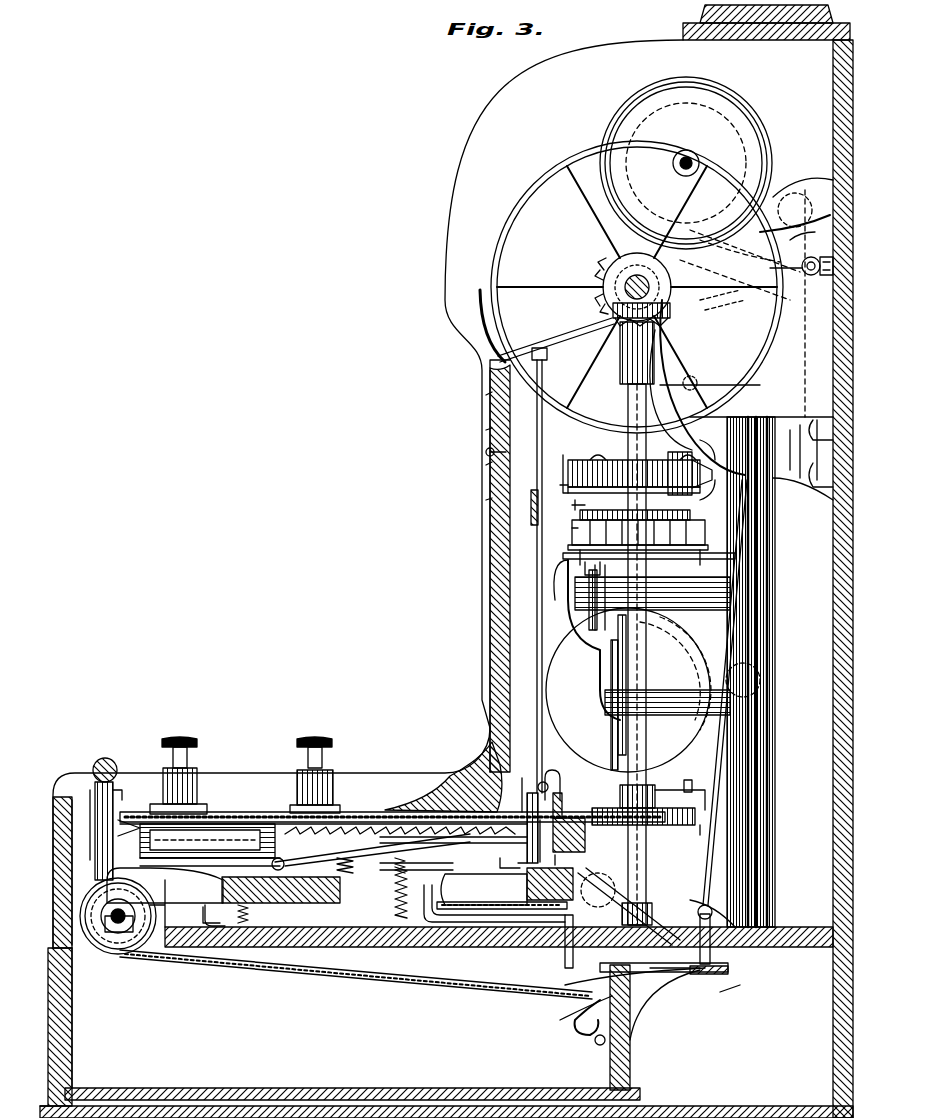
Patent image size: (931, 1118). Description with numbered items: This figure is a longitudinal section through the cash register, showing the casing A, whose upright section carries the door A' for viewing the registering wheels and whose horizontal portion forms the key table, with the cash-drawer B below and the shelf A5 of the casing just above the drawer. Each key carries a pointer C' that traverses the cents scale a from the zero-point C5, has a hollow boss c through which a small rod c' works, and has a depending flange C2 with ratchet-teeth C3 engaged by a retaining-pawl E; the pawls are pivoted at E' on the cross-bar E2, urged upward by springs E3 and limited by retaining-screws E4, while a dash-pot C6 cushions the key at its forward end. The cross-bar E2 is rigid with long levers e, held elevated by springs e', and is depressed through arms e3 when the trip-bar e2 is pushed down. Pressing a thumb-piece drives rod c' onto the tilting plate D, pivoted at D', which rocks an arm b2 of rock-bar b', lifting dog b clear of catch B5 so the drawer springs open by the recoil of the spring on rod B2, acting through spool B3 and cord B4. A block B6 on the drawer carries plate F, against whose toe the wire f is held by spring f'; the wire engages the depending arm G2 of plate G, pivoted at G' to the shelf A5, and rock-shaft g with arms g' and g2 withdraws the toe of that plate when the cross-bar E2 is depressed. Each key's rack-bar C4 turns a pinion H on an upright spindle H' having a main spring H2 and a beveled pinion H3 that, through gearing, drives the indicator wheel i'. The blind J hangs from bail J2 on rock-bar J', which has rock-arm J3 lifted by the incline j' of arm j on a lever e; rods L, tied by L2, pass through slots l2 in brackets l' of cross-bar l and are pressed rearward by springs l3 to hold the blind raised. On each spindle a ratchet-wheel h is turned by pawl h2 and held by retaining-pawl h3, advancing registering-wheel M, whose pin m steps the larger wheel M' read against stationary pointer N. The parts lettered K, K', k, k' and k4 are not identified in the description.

The casing A is at (453, 561).
The door A' is at (471, 571).
The shelf A5 is at (750, 947).
The cash-drawer B is at (446, 957).
The rod B2 is at (112, 945).
The loose spool B3 is at (168, 903).
The cord B4 is at (356, 979).
The catch B5 is at (695, 975).
The block or shelf B6 is at (650, 1005).
The plate F is at (592, 975).
The wire f is at (647, 1007).
The spring f' is at (579, 1040).
The indicator-wheel i' is at (637, 287).
The beveled pinion H3 is at (670, 312).
The upright spindle H' is at (646, 623).
The upper pulley K' is at (700, 188).
The blind J is at (478, 319).
The bail J2 is at (590, 332).
The rock-bar J' is at (801, 283).
The rock-arm J3 is at (806, 255).
The inclined end j' is at (722, 294).
The upright arm j is at (705, 387).
The rod L is at (536, 556).
The tie-bar L2 is at (531, 495).
The main spring H2 is at (614, 462).
The pinion k is at (691, 475).
The ratchet-wheel h is at (661, 521).
The pawl k' is at (571, 501).
The spring-actuated pawl h2 is at (575, 520).
The retaining-pawl h3 is at (686, 556).
The stop k4 is at (604, 564).
The registering-wheel M is at (648, 597).
The stationary pointer N is at (564, 584).
The pin m is at (632, 618).
The drum K is at (638, 690).
The larger registering-wheel M' is at (588, 705).
The pinion H is at (648, 852).
The cross-bar l is at (664, 672).
The rack-bar C4 is at (508, 812).
The retaining-screw E4 is at (365, 826).
The pawl pivot E' is at (323, 804).
The tilting plate D is at (305, 845).
The tilting-plate pivot D' is at (126, 825).
The dash-pot C6 is at (176, 858).
The ratchet-teeth C3 is at (372, 874).
The depending flange C2 is at (318, 744).
The hollow cylindrical boss c is at (248, 791).
The rod c' is at (249, 752).
The trip-bar e2 is at (108, 808).
The depending arm e3 is at (123, 794).
The lever e is at (147, 867).
The spring E3 is at (328, 862).
The retaining-pawl E is at (407, 863).
The cross-bar E2 is at (281, 899).
The spring e' is at (239, 914).
The rock-shaft g is at (272, 913).
The upright rock-arm g' is at (388, 896).
The lateral rock-arm g2 is at (203, 915).
The plate G is at (494, 903).
The pivot G' is at (484, 887).
The scale a is at (502, 913).
The depending arm G2 is at (563, 958).
The rock-bar b' is at (571, 872).
The rock-arm b2 is at (498, 853).
The dog b is at (662, 722).
The bracket l' is at (539, 814).
The slot l2 is at (554, 775).
The spring l3 is at (522, 780).
The zero-point C5 is at (536, 786).
The pointer C' is at (522, 862).